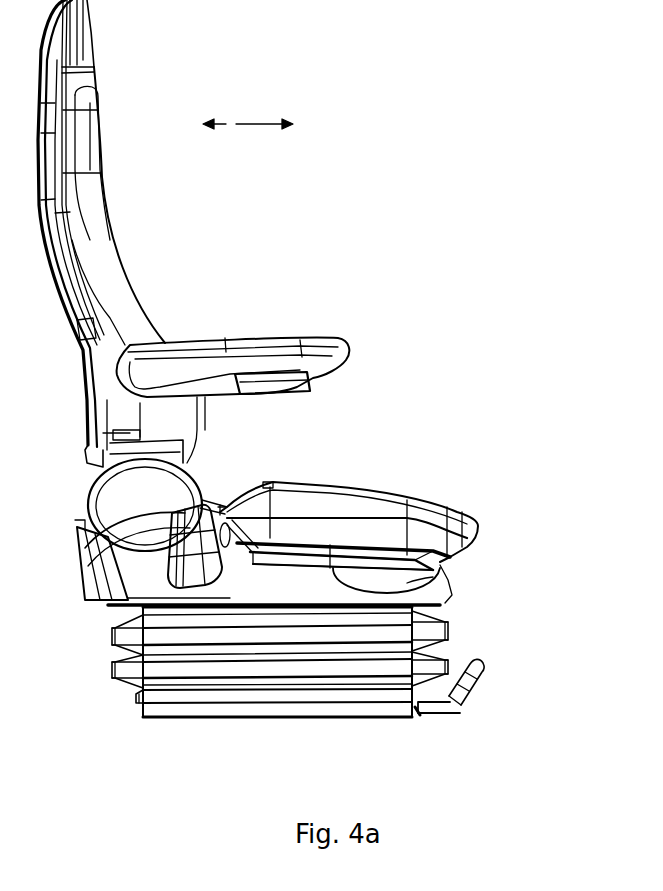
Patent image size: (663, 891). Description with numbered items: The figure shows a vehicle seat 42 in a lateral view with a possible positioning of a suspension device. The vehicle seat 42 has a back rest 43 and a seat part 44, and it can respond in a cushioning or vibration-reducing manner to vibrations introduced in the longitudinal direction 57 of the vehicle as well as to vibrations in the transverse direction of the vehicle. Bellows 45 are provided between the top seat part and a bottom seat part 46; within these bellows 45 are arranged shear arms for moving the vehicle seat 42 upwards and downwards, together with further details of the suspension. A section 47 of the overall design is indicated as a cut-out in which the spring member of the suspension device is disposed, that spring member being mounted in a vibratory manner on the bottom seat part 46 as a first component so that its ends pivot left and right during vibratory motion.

The vehicle seat 42 is at (417, 180).
The back rest 43 is at (113, 222).
The seat part 44 is at (383, 503).
The bellows 45 is at (450, 630).
The bottom seat part 46 is at (297, 486).
The section 47 is at (453, 582).
The longitudinal direction 57 is at (243, 124).